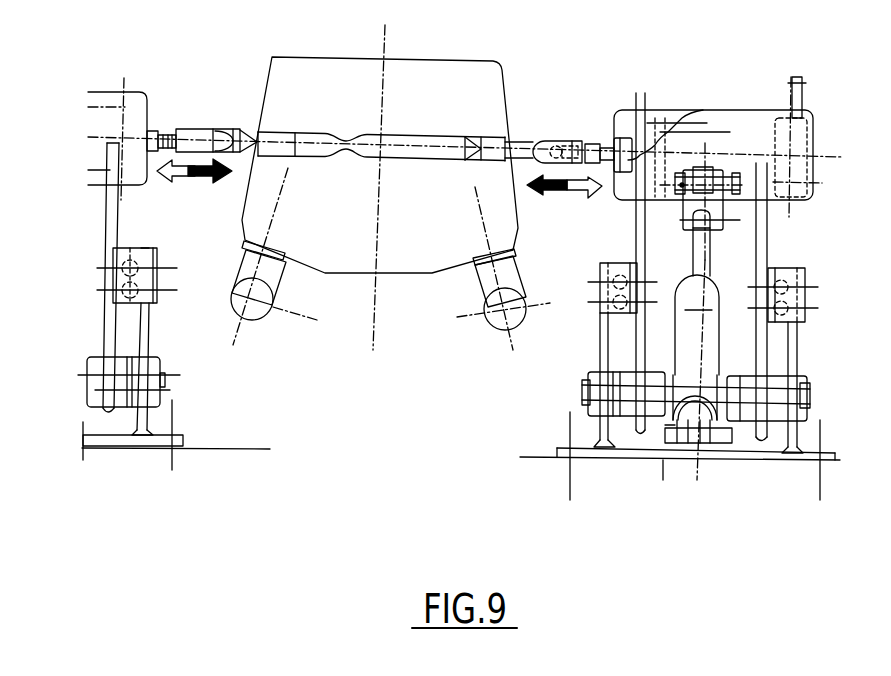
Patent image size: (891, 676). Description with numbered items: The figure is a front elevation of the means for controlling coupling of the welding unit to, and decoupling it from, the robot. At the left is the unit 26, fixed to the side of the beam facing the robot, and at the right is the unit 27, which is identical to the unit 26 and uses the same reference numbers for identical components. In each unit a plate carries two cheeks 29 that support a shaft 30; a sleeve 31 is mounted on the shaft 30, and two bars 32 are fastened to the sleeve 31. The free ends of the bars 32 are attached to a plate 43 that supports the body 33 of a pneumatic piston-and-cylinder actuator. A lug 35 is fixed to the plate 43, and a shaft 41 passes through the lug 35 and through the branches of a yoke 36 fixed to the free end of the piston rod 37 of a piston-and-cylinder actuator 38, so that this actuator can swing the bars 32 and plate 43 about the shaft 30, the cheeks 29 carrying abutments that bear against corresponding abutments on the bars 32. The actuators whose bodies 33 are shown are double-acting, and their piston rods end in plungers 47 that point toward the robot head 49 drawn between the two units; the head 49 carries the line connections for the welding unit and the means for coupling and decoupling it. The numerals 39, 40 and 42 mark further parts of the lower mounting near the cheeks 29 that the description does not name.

The unit 26 is at (135, 123).
The unit 27 is at (787, 150).
The cheeks 29 is at (595, 425).
The shaft 30 is at (587, 395).
The sleeve 31 is at (665, 387).
The bars 32 is at (640, 312).
The body of pneumatic piston-and-cylinder actuator 33 is at (664, 112).
The lug 35 is at (705, 170).
The yoke 36 is at (692, 220).
The piston rod 37 is at (708, 236).
The piston-and-cylinder actuator 38 is at (697, 370).
The foot 39 is at (693, 443).
The guide 40 is at (713, 437).
The shaft 41 is at (682, 185).
The foot bracket 42 is at (667, 430).
The plate 43 is at (633, 187).
The plunger 47 is at (202, 138).
The head 49 is at (312, 235).